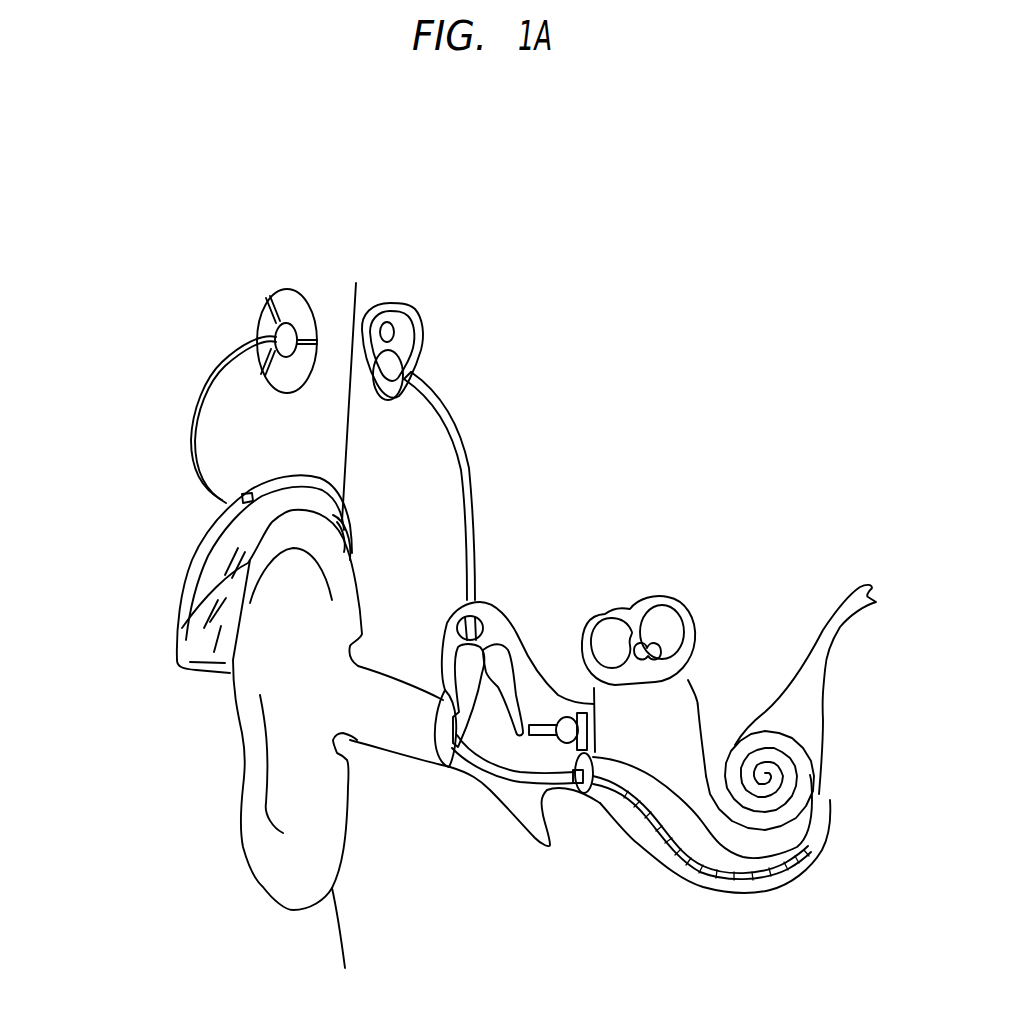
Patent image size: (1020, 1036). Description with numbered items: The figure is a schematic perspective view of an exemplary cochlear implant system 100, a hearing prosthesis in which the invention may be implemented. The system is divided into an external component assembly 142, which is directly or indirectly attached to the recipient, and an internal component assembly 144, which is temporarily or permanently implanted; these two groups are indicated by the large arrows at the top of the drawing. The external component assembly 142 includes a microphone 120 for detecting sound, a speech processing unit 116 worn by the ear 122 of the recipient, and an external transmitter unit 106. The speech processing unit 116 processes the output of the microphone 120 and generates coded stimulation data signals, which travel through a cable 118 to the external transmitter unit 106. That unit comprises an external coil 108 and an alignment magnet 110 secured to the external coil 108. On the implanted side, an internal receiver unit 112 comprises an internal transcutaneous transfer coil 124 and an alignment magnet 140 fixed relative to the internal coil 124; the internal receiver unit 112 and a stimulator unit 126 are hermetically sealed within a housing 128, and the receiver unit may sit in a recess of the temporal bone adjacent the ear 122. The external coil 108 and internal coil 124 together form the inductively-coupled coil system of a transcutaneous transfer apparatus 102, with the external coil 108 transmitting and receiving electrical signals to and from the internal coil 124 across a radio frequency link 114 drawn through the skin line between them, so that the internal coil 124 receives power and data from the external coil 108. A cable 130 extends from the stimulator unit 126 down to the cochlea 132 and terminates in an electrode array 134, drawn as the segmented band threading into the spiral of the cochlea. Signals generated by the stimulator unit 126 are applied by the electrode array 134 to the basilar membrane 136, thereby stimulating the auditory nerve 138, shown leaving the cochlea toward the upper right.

The cochlear implant system 100 is at (777, 500).
The transcutaneous transfer apparatus 102 is at (200, 447).
The external transmitter unit 106 is at (253, 310).
The external coil 108 is at (270, 313).
The alignment magnet 110 is at (282, 342).
The internal receiver unit 112 is at (442, 358).
The radio frequency (RF) link 114 is at (366, 334).
The speech processing unit 116 is at (295, 499).
The cable 118 is at (189, 445).
The microphone 120 is at (244, 493).
The ear 122 is at (242, 732).
The internal transcutaneous transfer coil 124 is at (424, 348).
The stimulator unit 126 is at (410, 380).
The housing 128 is at (388, 397).
The cable 130 is at (473, 487).
The cochlea 132 is at (826, 795).
The electrode array 134 is at (697, 865).
The basilar membrane 136 is at (620, 757).
The auditory nerve 138 is at (807, 671).
The alignment magnet 140 is at (387, 322).
The external component assembly 142 is at (233, 188).
The internal component assembly 144 is at (418, 206).